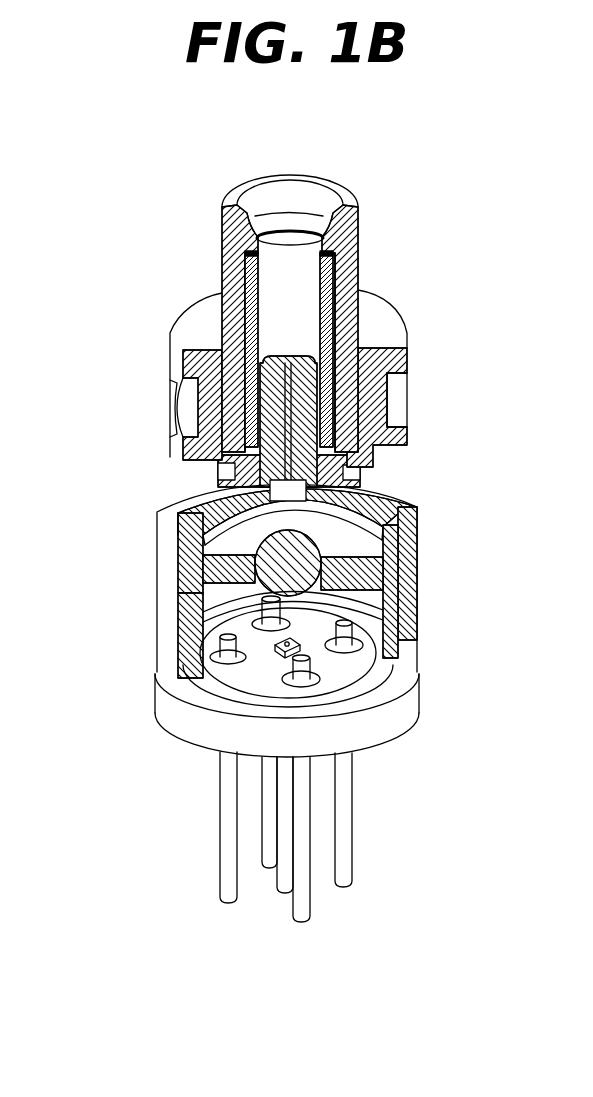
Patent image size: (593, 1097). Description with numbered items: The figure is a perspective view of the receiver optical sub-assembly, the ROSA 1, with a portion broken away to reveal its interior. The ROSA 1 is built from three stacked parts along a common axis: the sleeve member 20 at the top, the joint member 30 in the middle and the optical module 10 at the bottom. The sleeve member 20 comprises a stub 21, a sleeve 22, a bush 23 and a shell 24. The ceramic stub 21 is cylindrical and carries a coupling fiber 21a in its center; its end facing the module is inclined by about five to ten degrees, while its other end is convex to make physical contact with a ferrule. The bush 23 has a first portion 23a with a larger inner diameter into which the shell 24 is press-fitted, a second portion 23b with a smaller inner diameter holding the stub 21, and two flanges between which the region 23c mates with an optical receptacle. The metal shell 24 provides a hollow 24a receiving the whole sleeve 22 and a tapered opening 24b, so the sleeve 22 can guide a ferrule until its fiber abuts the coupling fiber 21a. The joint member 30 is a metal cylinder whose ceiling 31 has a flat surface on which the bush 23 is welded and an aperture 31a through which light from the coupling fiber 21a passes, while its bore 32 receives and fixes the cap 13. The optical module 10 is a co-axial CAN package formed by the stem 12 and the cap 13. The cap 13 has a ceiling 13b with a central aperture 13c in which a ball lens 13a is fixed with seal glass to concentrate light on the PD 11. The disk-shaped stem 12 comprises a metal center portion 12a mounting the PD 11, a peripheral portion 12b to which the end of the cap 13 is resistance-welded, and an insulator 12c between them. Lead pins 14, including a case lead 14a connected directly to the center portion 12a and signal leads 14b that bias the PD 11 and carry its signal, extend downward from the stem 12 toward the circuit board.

The ROSA 1 is at (379, 158).
The optical module 10 is at (115, 552).
The PD 11 is at (277, 653).
The stem 12 is at (420, 683).
The center portion 12a is at (228, 679).
The peripheral portion 12b is at (355, 700).
The insulator 12c is at (365, 678).
The cap 13 is at (418, 625).
The lens 13a is at (312, 566).
The ceiling 13b is at (187, 605).
The aperture 13c is at (385, 596).
The lead pins 14 is at (378, 933).
The case lead 14a is at (285, 893).
The signal leads 14b is at (262, 835).
The sleeve member 20 is at (122, 192).
The stub 21 is at (288, 355).
The coupling fiber 21a is at (396, 391).
The sleeve 22 is at (340, 273).
The bush 23 is at (405, 324).
The first portion 23a is at (220, 376).
The second portion 23b is at (217, 461).
The flange gap 23c is at (196, 409).
The shell 24 is at (222, 238).
The hollow 24a is at (245, 272).
The tapered opening 24b is at (314, 205).
The joint member 30 is at (83, 442).
The ceiling 31 is at (410, 477).
The aperture 31a is at (200, 524).
The bore 32 is at (400, 519).